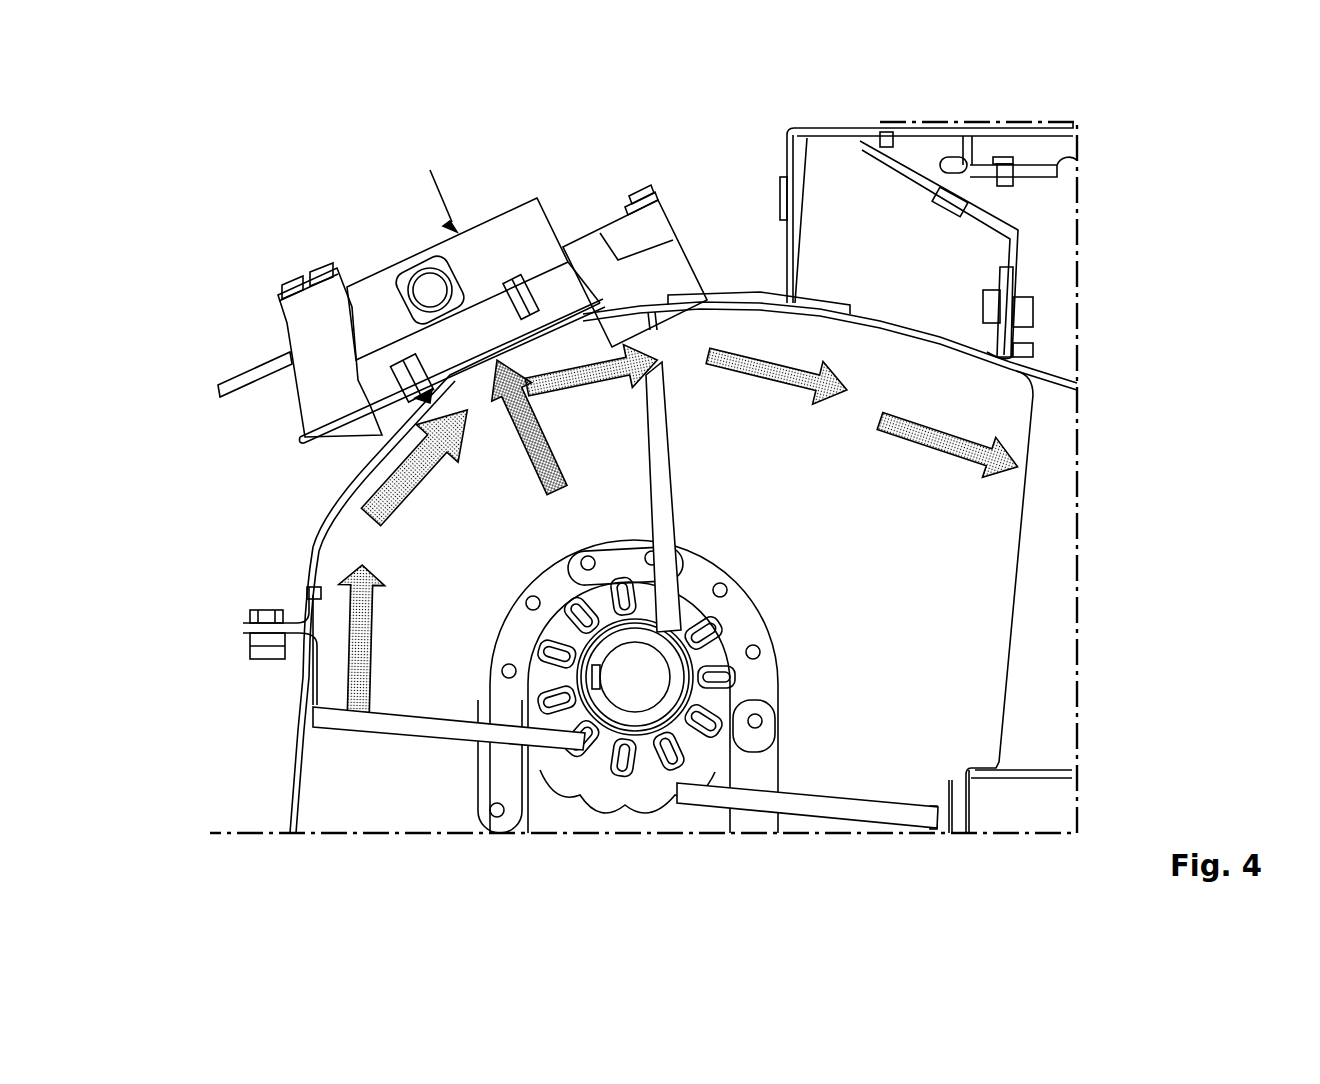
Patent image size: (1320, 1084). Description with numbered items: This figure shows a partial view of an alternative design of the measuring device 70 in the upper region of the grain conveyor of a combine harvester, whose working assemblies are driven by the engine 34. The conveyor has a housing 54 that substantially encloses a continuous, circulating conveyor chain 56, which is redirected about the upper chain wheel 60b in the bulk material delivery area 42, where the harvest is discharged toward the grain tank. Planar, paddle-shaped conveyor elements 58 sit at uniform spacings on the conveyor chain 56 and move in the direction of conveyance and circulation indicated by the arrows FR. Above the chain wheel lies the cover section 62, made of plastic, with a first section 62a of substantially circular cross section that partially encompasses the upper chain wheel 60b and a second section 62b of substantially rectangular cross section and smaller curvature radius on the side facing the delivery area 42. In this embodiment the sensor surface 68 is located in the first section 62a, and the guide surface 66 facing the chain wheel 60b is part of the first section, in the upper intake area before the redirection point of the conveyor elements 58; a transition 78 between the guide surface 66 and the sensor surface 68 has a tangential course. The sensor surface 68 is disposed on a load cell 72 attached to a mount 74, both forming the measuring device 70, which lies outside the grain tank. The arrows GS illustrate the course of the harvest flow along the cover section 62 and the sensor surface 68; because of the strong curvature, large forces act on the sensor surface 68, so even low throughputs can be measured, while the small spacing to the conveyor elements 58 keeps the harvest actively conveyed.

The engine 34 is at (1060, 330).
The bulk material delivery area 42 is at (1033, 523).
The housing 54 is at (286, 779).
The conveyor chain 56 is at (492, 795).
The conveyor elements 58 is at (335, 720).
The upper chain wheel 60b is at (535, 673).
The cover section 62 is at (302, 547).
The first section 62a is at (318, 517).
The second section 62b is at (722, 310).
The guide surface 66 is at (325, 533).
The sensor surface 68 is at (573, 320).
The measuring device 70 is at (398, 254).
The load cell 72 is at (372, 292).
The mount 74 is at (312, 335).
The transition 78 is at (368, 440).
The flow course GS is at (385, 490).
The direction of conveyance FR is at (340, 693).